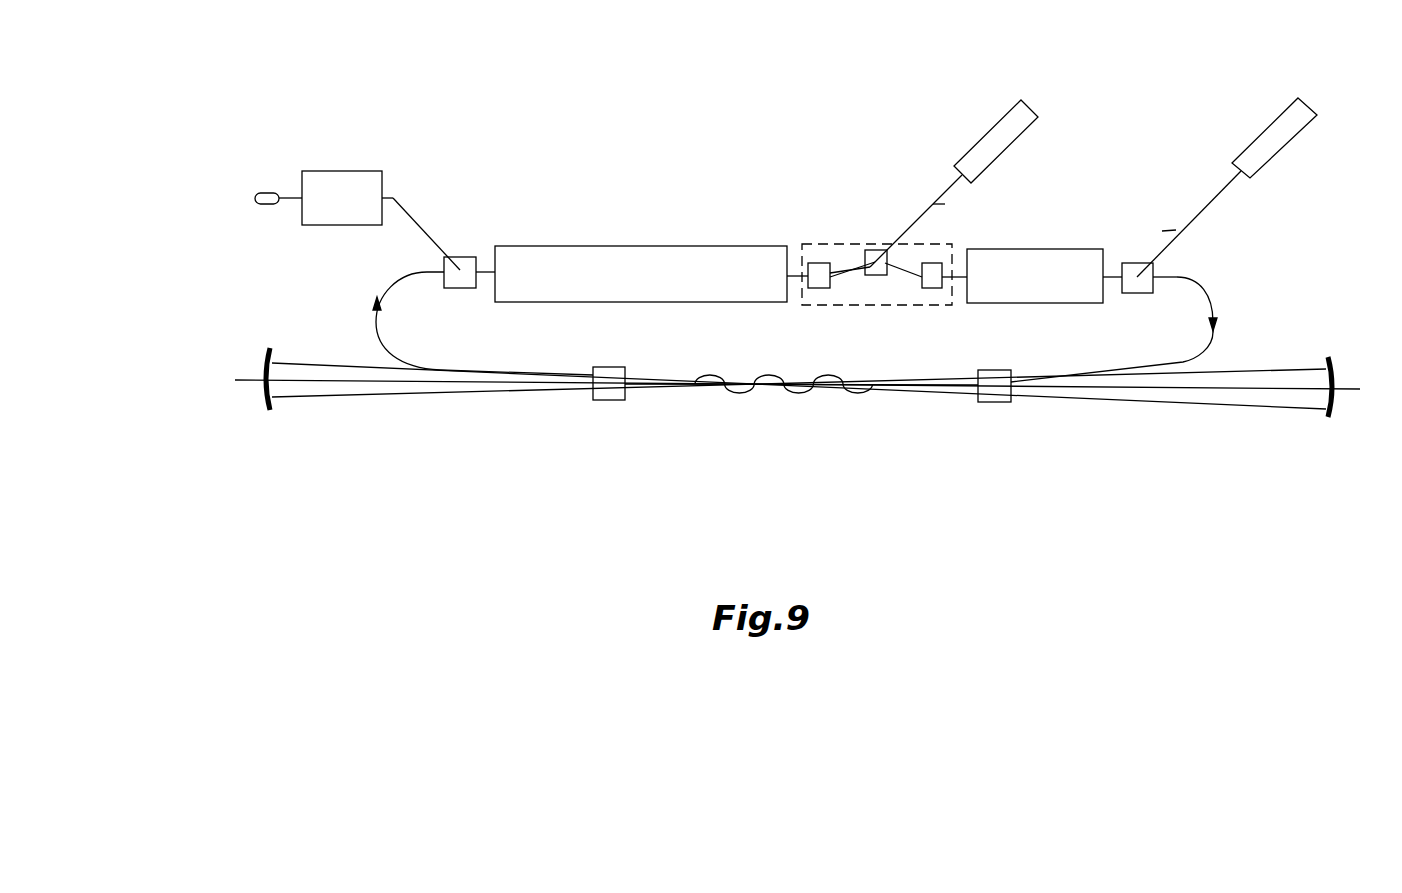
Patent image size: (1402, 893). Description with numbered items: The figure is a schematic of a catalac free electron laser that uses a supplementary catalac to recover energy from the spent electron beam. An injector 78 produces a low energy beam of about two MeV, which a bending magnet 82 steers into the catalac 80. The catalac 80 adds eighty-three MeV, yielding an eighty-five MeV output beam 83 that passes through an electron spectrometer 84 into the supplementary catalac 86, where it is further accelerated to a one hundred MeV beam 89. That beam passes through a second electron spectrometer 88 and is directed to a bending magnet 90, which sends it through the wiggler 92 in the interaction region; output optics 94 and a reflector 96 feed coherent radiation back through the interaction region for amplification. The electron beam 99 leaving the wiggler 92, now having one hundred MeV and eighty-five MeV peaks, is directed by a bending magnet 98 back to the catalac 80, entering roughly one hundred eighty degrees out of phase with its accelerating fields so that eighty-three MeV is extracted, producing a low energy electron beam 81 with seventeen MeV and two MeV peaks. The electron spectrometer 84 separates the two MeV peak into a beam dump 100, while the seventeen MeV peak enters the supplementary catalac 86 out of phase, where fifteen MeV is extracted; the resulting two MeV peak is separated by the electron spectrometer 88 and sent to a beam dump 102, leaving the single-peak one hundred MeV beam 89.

The injector 78 is at (357, 171).
The catalac 80 is at (656, 246).
The electron beam 81 is at (793, 282).
The bending magnet 82 is at (472, 257).
The output beam 83 is at (791, 247).
The electron spectrometer 84 is at (852, 244).
The supplementary catalac 86 is at (1072, 249).
The electron spectrometer 88 is at (1157, 262).
The 100 MeV beam 89 is at (1224, 292).
The bending magnet 90 is at (998, 402).
The wiggler 92 is at (787, 393).
The output optics 94 is at (272, 410).
The reflector 96 is at (1328, 418).
The bending magnet 98 is at (612, 400).
The electron beam 99 is at (380, 332).
The beam dump 100 is at (1025, 100).
The beam dump 102 is at (1298, 97).